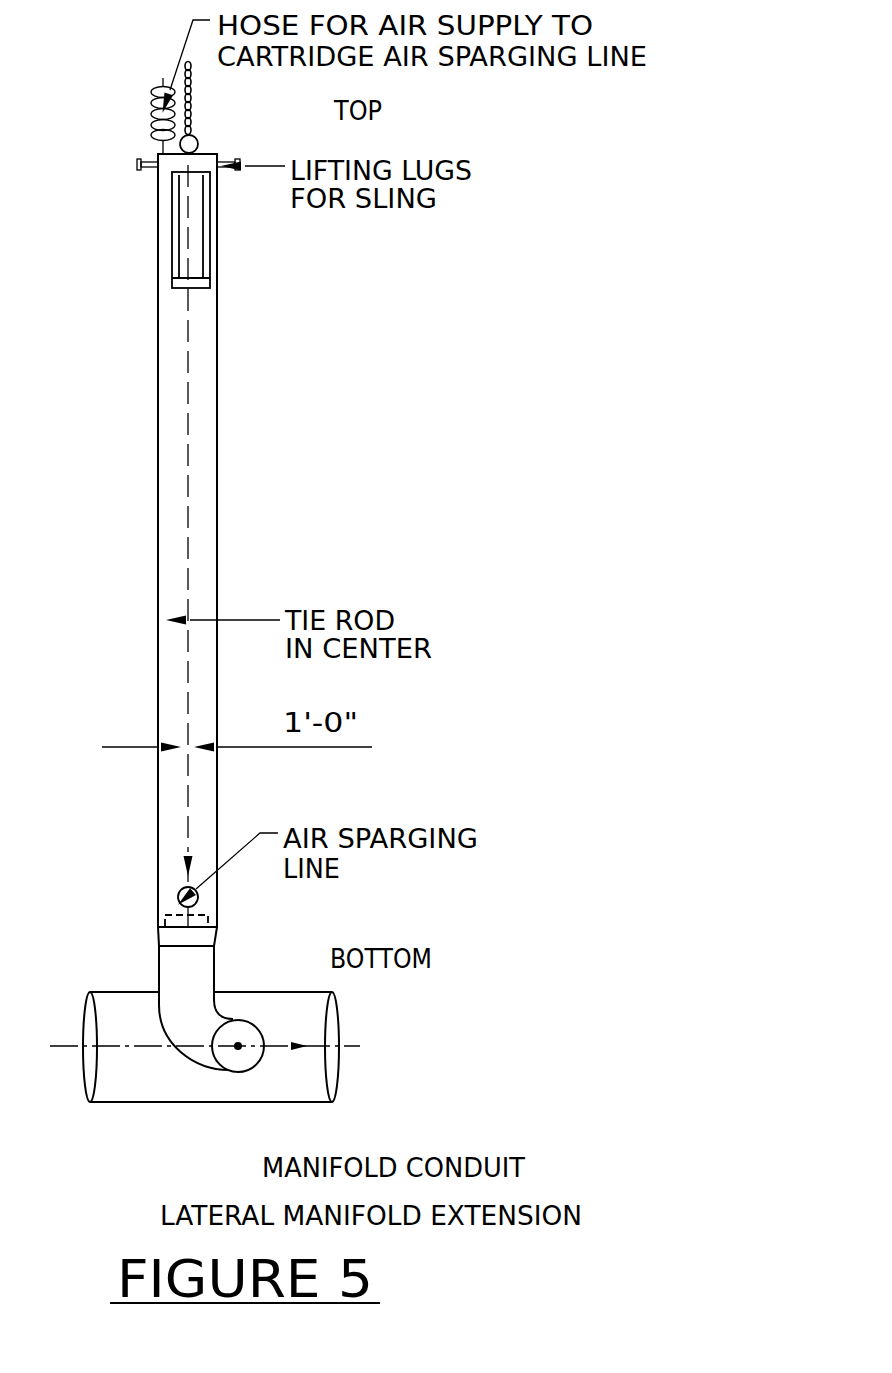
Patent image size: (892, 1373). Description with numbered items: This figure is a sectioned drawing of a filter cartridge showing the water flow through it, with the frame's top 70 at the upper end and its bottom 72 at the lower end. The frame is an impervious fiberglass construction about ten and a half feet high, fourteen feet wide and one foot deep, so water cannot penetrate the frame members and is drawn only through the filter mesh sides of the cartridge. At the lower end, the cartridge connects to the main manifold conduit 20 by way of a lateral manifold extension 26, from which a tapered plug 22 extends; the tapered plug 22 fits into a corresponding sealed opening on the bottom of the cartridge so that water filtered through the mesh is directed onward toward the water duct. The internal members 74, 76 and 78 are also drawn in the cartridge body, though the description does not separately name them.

The manifold conduit 20 is at (205, 1089).
The tapered plug 22 is at (128, 546).
The lateral manifold extension 26 is at (175, 1080).
The top 70 is at (235, 129).
The bottom 72 is at (242, 932).
The cartridge sidewall 74 is at (222, 428).
The upper cartridge support 76 is at (256, 230).
The cartridge shell 78 is at (279, 345).